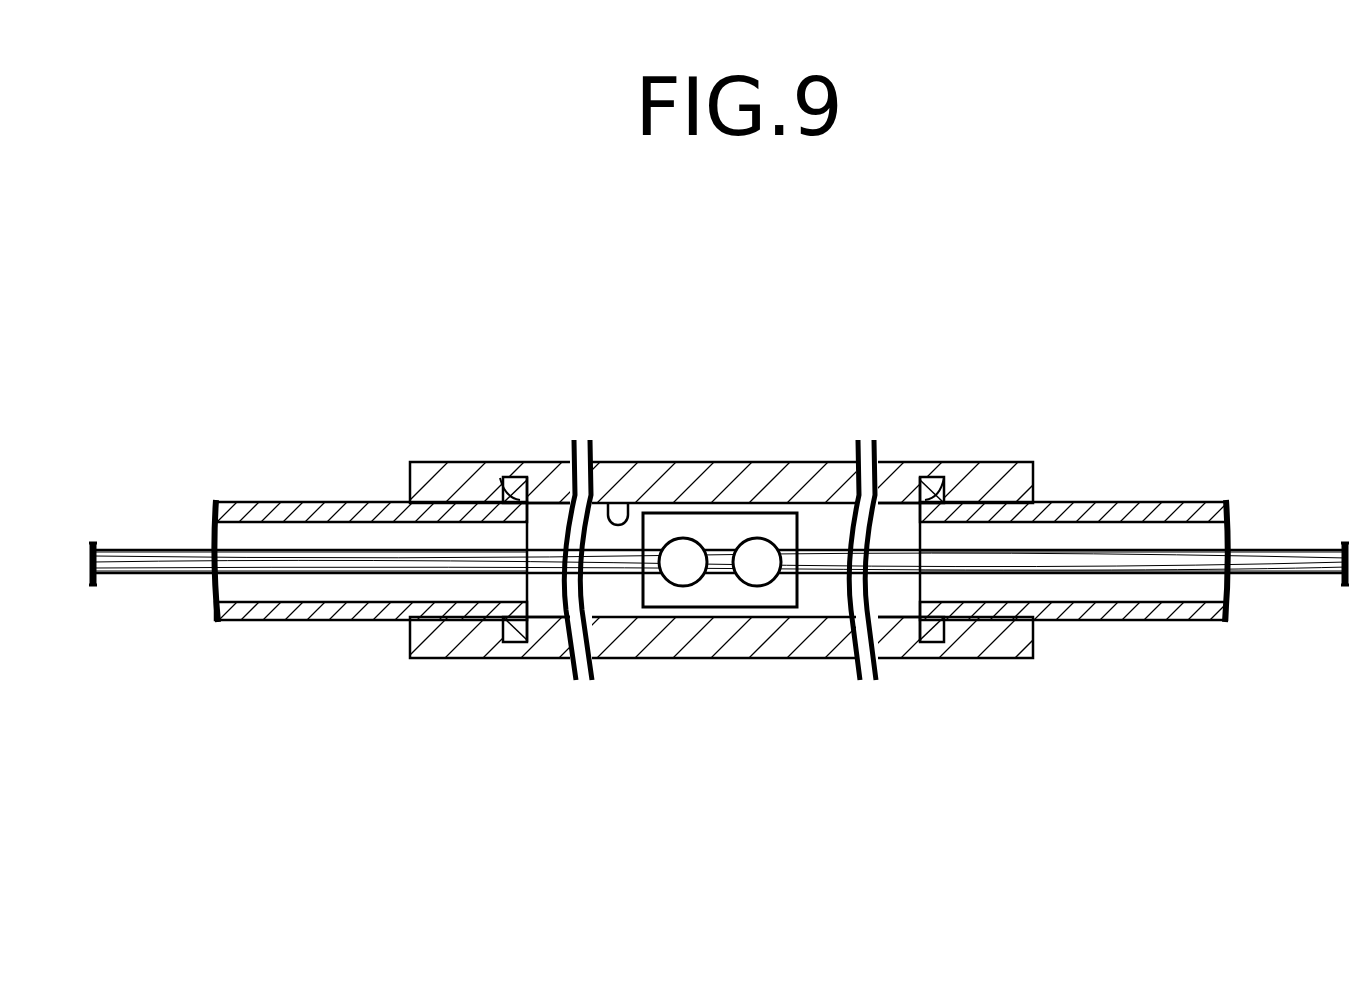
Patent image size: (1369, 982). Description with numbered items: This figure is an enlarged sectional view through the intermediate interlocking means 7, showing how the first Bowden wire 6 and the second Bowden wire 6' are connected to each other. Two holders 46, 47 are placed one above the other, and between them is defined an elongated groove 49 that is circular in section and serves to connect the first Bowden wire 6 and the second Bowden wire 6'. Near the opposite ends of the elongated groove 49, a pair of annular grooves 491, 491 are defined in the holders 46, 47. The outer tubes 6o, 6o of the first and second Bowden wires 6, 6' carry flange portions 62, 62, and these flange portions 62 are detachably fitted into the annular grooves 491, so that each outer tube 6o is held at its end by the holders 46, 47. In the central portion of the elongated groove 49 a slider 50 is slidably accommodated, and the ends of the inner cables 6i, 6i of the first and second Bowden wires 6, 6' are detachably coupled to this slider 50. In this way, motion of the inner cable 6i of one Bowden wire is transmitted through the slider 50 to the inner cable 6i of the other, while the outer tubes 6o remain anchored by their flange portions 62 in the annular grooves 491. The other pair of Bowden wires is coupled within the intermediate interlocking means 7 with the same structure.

The intermediate interlocking means 7 is at (825, 447).
The holder 46 is at (794, 478).
The holder 47 is at (790, 642).
The elongated groove 49 is at (640, 505).
The annular groove 491 is at (1030, 412).
The slider 50 is at (728, 598).
The flange portion 62 is at (514, 642).
The first Bowden wire 6 is at (1134, 465).
The second Bowden wire 6' is at (308, 459).
The inner cable 6i is at (113, 548).
The outer tube 6o is at (300, 508).